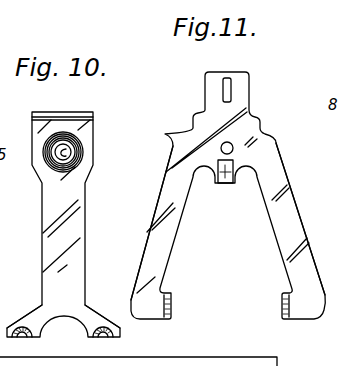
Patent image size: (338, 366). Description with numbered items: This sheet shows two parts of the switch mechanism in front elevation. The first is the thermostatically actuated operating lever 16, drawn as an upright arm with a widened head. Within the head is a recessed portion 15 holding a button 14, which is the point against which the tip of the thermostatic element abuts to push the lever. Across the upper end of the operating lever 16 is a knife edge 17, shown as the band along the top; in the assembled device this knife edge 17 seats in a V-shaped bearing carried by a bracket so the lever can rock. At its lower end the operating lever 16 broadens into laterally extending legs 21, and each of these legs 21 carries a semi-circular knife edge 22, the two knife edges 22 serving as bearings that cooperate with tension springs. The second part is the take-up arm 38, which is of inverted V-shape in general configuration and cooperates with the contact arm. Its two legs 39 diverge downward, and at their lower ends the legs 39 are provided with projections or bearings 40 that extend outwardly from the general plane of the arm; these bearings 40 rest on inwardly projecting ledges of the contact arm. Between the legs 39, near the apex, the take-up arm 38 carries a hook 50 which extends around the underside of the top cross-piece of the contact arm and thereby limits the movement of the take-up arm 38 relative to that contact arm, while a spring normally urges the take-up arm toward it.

In FIG. 10, the button 14 is at (72, 148).
In FIG. 10, the recessed portion 15 is at (79, 157).
In FIG. 10, the operating lever 16 is at (77, 226).
In FIG. 10, the knife edge 17 is at (62, 104).
In FIG. 10, the laterally extending legs 21 is at (27, 318).
In FIG. 10, the semi-circular knife edges 22 is at (22, 337).
In FIG. 11, the take-up arm 38 is at (275, 148).
In FIG. 11, the legs 39 is at (147, 255).
In FIG. 11, the projections or bearings 40 is at (174, 305).
In FIG. 11, the hook 50 is at (230, 184).